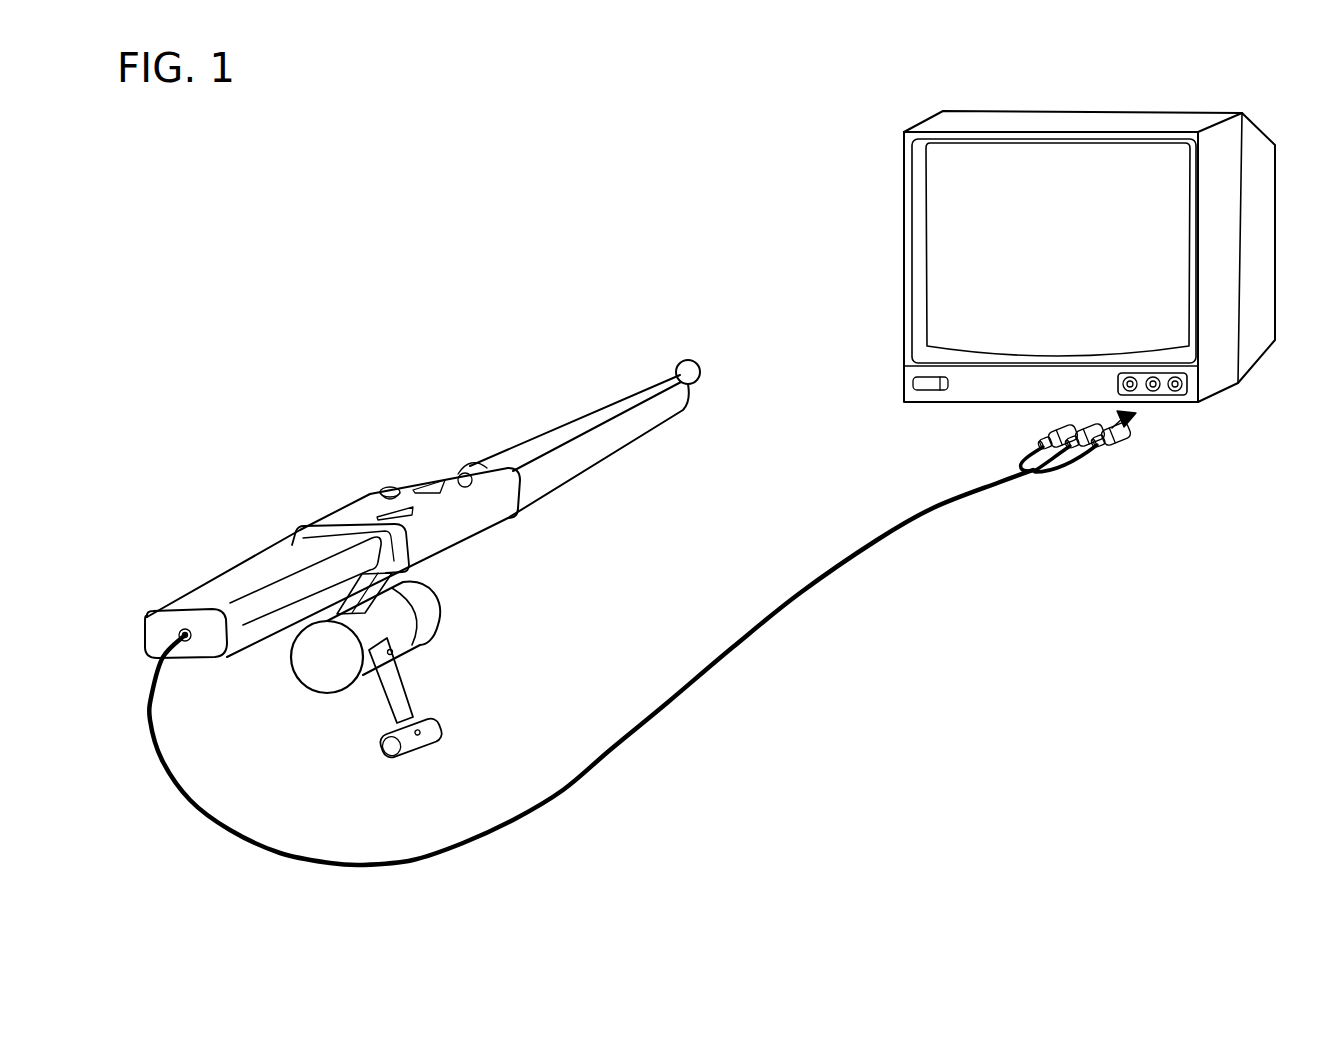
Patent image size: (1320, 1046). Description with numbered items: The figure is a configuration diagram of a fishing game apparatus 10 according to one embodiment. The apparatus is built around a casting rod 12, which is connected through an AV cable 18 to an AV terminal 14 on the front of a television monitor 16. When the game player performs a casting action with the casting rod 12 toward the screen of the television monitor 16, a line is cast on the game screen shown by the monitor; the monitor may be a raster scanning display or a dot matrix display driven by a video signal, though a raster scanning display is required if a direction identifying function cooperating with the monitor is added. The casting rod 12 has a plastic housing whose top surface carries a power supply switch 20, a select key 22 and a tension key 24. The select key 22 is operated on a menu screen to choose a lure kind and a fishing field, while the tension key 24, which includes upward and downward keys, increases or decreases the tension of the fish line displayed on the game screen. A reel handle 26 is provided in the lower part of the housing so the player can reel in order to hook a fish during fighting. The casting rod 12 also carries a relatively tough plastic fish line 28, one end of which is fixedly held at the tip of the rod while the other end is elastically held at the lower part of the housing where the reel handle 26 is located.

The fishing game apparatus 10 is at (707, 240).
The casting rod 12 is at (244, 512).
The AV terminal 14 is at (1157, 394).
The television monitor 16 is at (907, 212).
The AV cable 18 is at (878, 537).
The power supply switch 20 is at (468, 473).
The select key 22 is at (388, 487).
The tension key 24 is at (414, 476).
The reel handle 26 is at (393, 687).
The fish line 28 is at (600, 495).